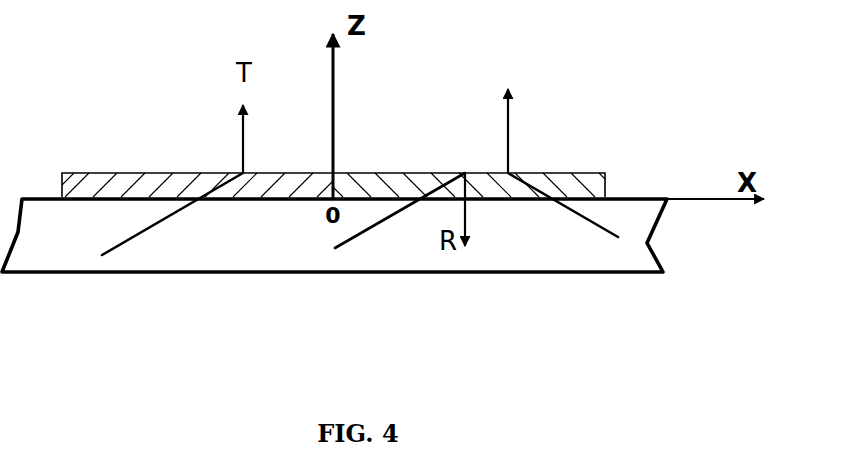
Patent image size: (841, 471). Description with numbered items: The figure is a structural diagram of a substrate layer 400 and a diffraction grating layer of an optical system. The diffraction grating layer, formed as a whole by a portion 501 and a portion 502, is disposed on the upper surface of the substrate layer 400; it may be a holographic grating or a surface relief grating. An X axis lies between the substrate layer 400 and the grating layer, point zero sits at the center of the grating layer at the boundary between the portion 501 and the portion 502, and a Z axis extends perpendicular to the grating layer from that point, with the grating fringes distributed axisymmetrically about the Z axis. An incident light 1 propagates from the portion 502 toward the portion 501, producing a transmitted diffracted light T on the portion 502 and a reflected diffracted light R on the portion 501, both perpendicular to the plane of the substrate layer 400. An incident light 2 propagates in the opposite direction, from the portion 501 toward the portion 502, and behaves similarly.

The substrate layer 400 is at (250, 252).
The portion of the diffraction grating layer 501 is at (487, 163).
The portion of the diffraction grating layer 502 is at (193, 167).
The incident light 1 is at (283, 221).
The incident light 2 is at (563, 216).